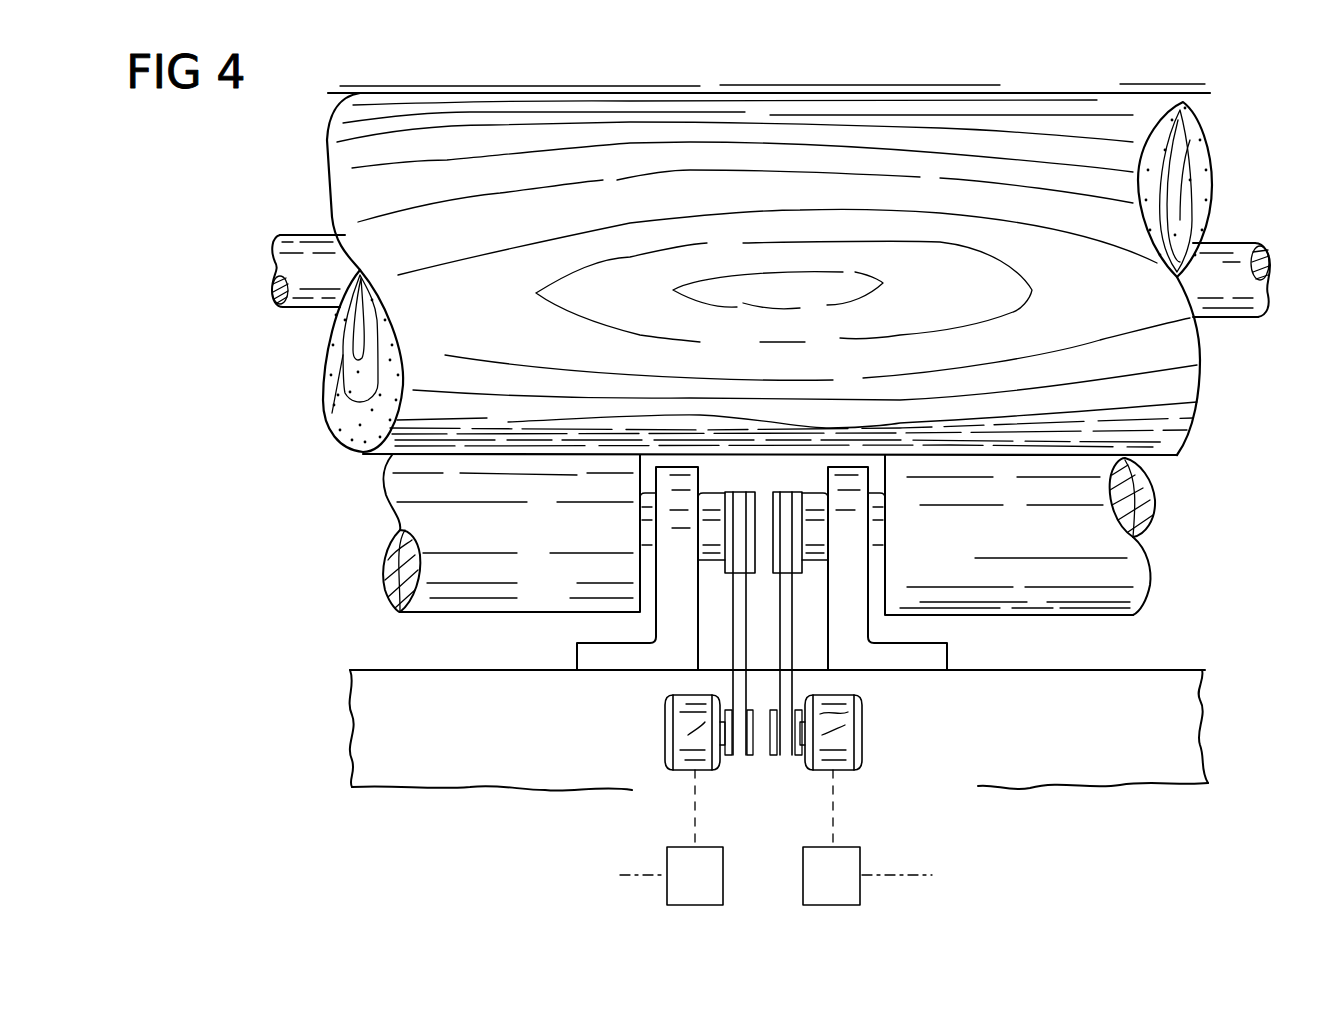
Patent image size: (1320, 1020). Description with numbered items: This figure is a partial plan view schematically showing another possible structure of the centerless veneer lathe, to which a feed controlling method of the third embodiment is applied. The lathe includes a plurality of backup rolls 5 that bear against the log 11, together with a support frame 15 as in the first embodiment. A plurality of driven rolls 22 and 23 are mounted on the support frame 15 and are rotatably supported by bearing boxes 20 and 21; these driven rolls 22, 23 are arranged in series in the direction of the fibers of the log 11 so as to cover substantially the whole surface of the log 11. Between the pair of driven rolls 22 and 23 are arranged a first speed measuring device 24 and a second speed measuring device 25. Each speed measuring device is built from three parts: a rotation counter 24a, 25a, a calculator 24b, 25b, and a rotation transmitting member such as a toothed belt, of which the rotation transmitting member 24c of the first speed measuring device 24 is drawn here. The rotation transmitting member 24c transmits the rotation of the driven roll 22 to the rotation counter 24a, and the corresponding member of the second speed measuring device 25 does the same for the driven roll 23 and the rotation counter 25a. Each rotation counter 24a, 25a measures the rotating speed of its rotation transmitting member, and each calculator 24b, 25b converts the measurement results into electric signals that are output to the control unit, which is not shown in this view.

The backup rolls 5 is at (273, 260).
The log 11 is at (353, 358).
The support frame 15 is at (397, 763).
The bearing box 20 is at (598, 658).
The bearing box 21 is at (948, 652).
The driven roll 22 is at (417, 523).
The driven roll 23 is at (1160, 468).
The first speed measuring device 24 is at (656, 698).
The rotation counter 24a is at (668, 738).
The calculator 24b is at (678, 860).
The rotation transmitting member 24c is at (722, 628).
The second speed measuring device 25 is at (891, 698).
The rotation counter 25a is at (838, 735).
The calculator 25b is at (838, 870).